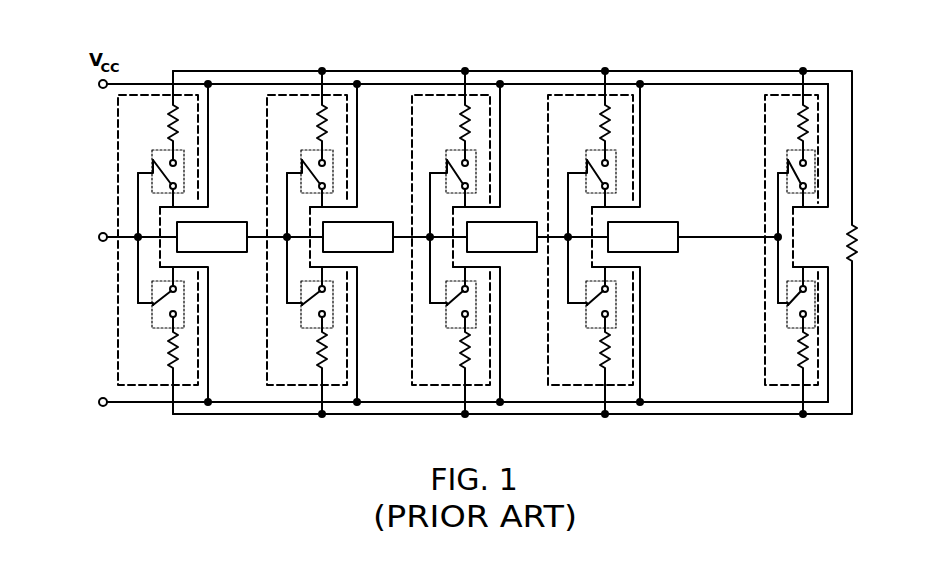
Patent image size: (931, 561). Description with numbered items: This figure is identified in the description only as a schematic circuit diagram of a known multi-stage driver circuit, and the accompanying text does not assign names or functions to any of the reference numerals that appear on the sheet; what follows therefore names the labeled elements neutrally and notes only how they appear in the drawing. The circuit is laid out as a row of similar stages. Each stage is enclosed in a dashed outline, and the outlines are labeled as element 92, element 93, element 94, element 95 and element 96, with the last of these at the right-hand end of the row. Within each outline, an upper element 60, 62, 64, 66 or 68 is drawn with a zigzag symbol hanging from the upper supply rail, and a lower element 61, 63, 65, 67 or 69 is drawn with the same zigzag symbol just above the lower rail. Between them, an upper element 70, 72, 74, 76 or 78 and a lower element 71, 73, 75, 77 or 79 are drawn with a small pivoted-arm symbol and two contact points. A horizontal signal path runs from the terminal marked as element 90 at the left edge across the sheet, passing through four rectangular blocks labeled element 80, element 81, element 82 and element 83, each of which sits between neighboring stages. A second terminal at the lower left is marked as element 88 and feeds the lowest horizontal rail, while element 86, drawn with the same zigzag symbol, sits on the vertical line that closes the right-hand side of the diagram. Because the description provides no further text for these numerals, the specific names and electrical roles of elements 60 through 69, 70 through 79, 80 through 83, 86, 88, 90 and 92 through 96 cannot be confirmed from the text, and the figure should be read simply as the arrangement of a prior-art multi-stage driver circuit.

The resistor 60 is at (170, 125).
The resistor 61 is at (170, 345).
The resistor 62 is at (319, 126).
The resistor 63 is at (319, 345).
The resistor 64 is at (462, 126).
The resistor 65 is at (462, 345).
The resistor 66 is at (602, 126).
The resistor 67 is at (602, 347).
The resistor 68 is at (800, 122).
The resistor 69 is at (800, 347).
The switch 70 is at (152, 159).
The switch 71 is at (152, 322).
The switch 72 is at (301, 159).
The switch 73 is at (301, 322).
The switch 74 is at (446, 159).
The switch 75 is at (446, 322).
The switch 76 is at (586, 159).
The switch 77 is at (586, 322).
The switch 78 is at (787, 160).
The switch 79 is at (788, 313).
The delay element 80 is at (242, 208).
The delay element 81 is at (390, 208).
The delay element 82 is at (532, 208).
The delay element 83 is at (675, 208).
The termination resistor 86 is at (847, 242).
The ground terminal 88 is at (106, 406).
The input terminal 90 is at (103, 232).
The driver stage 92 is at (119, 382).
The driver stage 93 is at (267, 382).
The driver stage 94 is at (412, 382).
The driver stage 95 is at (548, 382).
The output driver stage 96 is at (766, 380).